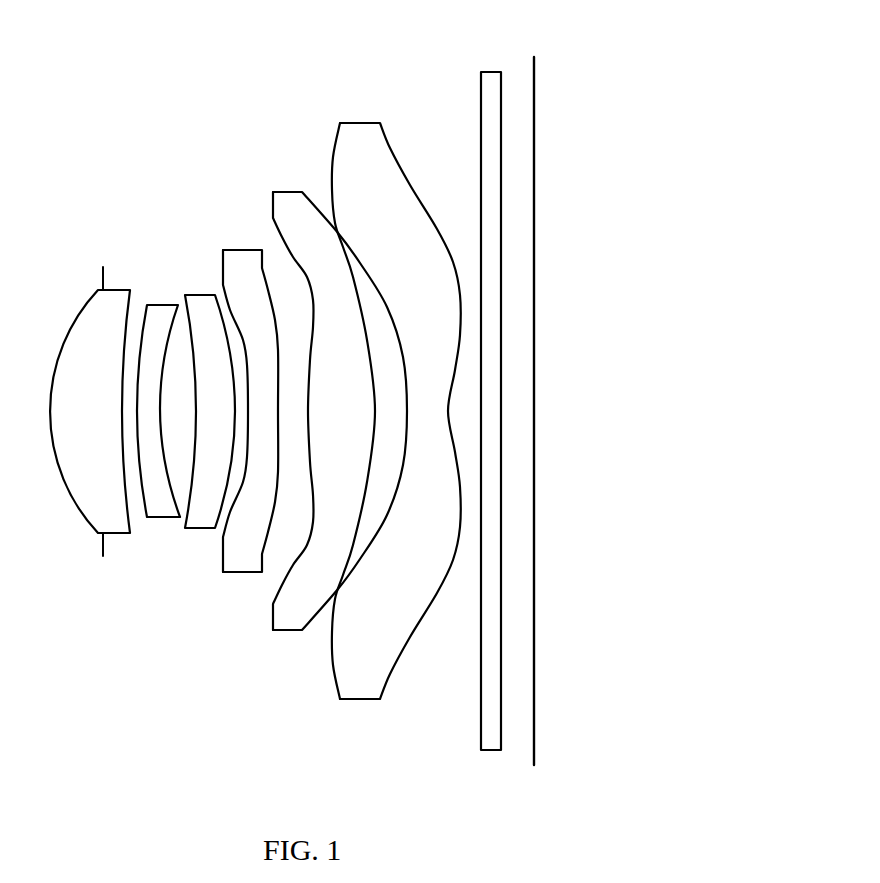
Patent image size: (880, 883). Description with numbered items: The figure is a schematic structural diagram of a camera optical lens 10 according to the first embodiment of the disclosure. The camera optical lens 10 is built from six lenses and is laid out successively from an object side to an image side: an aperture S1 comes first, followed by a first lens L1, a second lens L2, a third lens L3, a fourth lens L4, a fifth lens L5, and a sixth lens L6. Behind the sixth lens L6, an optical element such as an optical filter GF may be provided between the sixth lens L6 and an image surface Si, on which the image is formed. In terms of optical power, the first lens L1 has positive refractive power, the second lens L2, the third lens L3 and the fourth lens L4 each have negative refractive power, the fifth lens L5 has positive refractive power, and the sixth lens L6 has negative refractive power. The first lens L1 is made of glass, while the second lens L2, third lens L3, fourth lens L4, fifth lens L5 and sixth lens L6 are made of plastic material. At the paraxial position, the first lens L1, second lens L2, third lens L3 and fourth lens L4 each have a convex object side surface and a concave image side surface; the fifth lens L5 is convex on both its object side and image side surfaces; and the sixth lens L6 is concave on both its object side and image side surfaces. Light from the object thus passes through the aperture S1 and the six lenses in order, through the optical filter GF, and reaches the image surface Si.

The camera optical lens 10 is at (292, 36).
The aperture S1 is at (105, 400).
The first lens L1 is at (92, 399).
The second lens L2 is at (158, 400).
The third lens L3 is at (210, 398).
The fourth lens L4 is at (250, 400).
The fifth lens L5 is at (340, 399).
The sixth lens L6 is at (396, 397).
The optical filter GF is at (491, 399).
The image surface Si is at (536, 399).